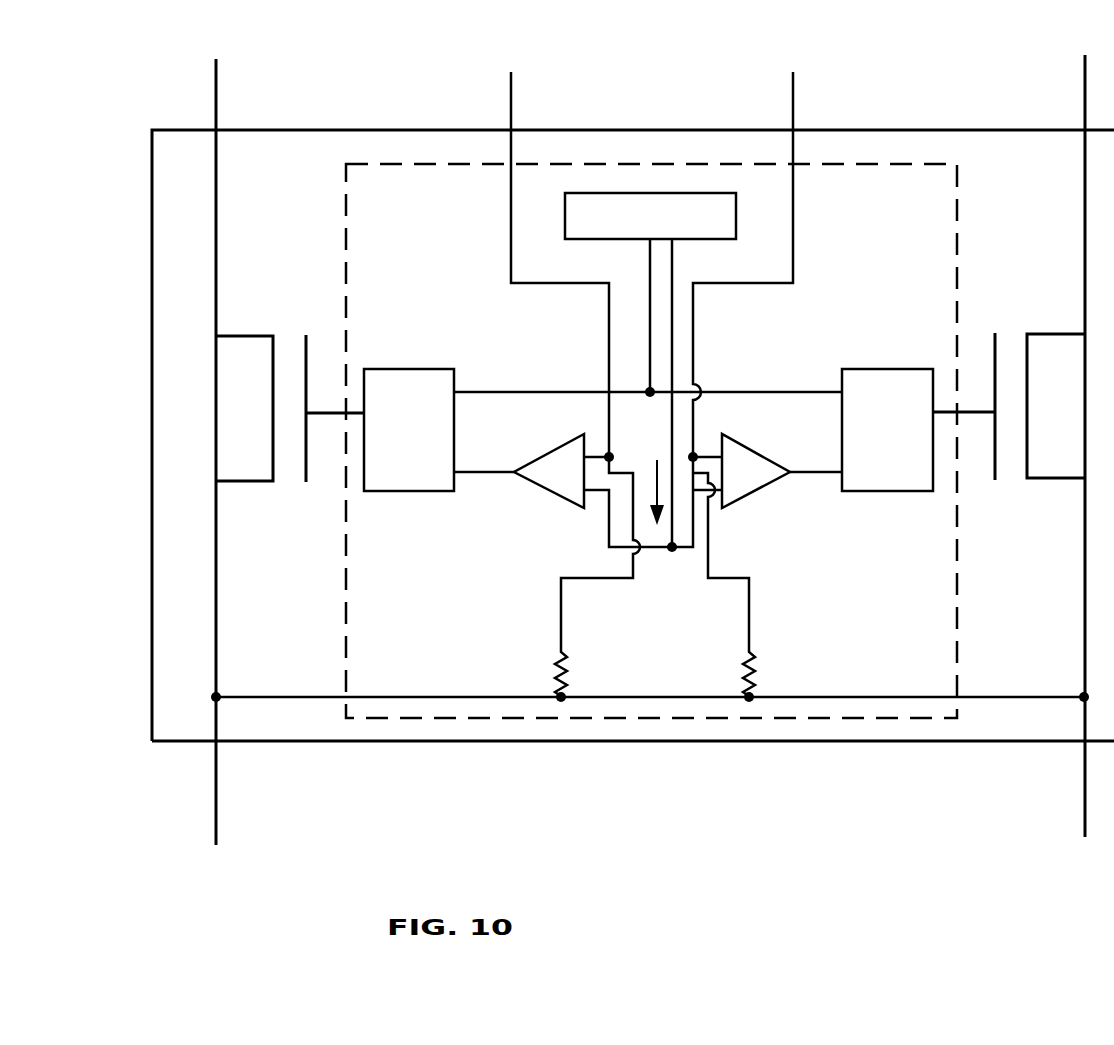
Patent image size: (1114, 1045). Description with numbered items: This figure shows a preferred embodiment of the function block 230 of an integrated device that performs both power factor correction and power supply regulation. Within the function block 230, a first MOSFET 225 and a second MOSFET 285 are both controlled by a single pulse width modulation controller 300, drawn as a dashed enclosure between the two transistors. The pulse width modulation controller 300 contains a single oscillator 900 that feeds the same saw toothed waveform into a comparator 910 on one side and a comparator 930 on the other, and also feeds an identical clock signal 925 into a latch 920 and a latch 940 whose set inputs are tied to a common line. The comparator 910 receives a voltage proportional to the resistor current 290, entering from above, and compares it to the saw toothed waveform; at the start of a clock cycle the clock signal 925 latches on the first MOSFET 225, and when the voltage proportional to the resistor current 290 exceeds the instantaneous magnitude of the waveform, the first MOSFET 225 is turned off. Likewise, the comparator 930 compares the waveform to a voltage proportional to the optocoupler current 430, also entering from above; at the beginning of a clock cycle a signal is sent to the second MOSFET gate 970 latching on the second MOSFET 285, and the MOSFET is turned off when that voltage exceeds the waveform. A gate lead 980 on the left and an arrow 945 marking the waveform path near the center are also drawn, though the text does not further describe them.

The first MOSFET 225 is at (244, 452).
The second MOSFET 285 is at (1059, 446).
The gate of first transistor 980 is at (307, 412).
The second MOSFET gate 970 is at (993, 411).
The resistor current 290 is at (524, 70).
The optocoupler current 430 is at (807, 70).
The oscillator 900 is at (650, 361).
The clock signal 925 is at (550, 378).
The latch 920 is at (409, 416).
The latch 940 is at (887, 416).
The comparator 910 is at (563, 566).
The comparator 930 is at (757, 565).
The reference signal 945 is at (656, 480).
The pulse width modulation controller 300 is at (957, 652).
The function block 230 is at (910, 752).